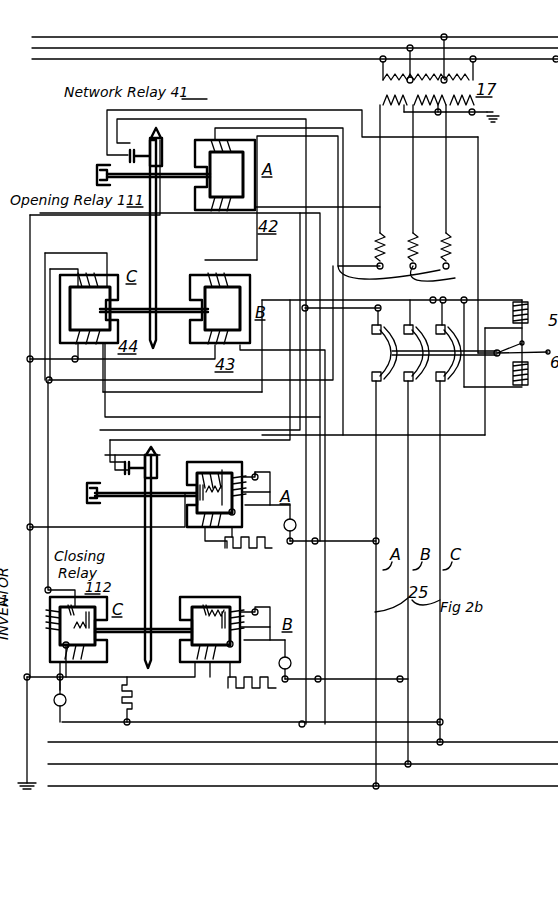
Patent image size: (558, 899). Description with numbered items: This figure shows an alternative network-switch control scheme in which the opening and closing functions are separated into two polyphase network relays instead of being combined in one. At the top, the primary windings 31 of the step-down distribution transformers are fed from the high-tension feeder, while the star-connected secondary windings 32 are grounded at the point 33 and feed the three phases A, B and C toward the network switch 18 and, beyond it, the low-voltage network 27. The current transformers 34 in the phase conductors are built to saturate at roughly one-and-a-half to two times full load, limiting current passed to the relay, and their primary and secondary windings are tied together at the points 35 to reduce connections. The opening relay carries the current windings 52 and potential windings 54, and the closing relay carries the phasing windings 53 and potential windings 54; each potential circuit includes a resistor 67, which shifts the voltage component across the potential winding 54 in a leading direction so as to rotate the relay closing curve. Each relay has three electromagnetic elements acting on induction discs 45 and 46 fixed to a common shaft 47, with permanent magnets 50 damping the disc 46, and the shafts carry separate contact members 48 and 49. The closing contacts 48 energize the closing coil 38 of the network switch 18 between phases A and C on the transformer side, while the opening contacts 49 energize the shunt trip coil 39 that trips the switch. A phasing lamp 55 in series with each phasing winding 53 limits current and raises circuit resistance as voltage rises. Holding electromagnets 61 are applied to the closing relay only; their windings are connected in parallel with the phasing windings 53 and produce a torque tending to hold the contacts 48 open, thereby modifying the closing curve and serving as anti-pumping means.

The network switch 18 is at (426, 346).
The low-voltage network 27 is at (455, 786).
The primary winding 31 is at (475, 80).
The secondary winding 32 is at (476, 107).
The grounding point 33 is at (500, 114).
The current transformer 34 is at (376, 244).
The connection point 35 is at (443, 298).
The closing coil 38 is at (524, 302).
The shunt trip coil 39 is at (528, 385).
The induction disc 45 is at (165, 310).
The induction disc 46 is at (176, 180).
The common shaft 47 is at (148, 240).
The closing contact member 48 is at (124, 470).
The opening contact member 49 is at (128, 156).
The permanent magnet 50 is at (95, 176).
The current winding 52 is at (226, 140).
The phasing winding 53 is at (246, 486).
The potential winding 54 is at (82, 688).
The phasing lamp 55 is at (292, 548).
The holding electromagnet 61 is at (214, 462).
The resistor 67 is at (242, 540).